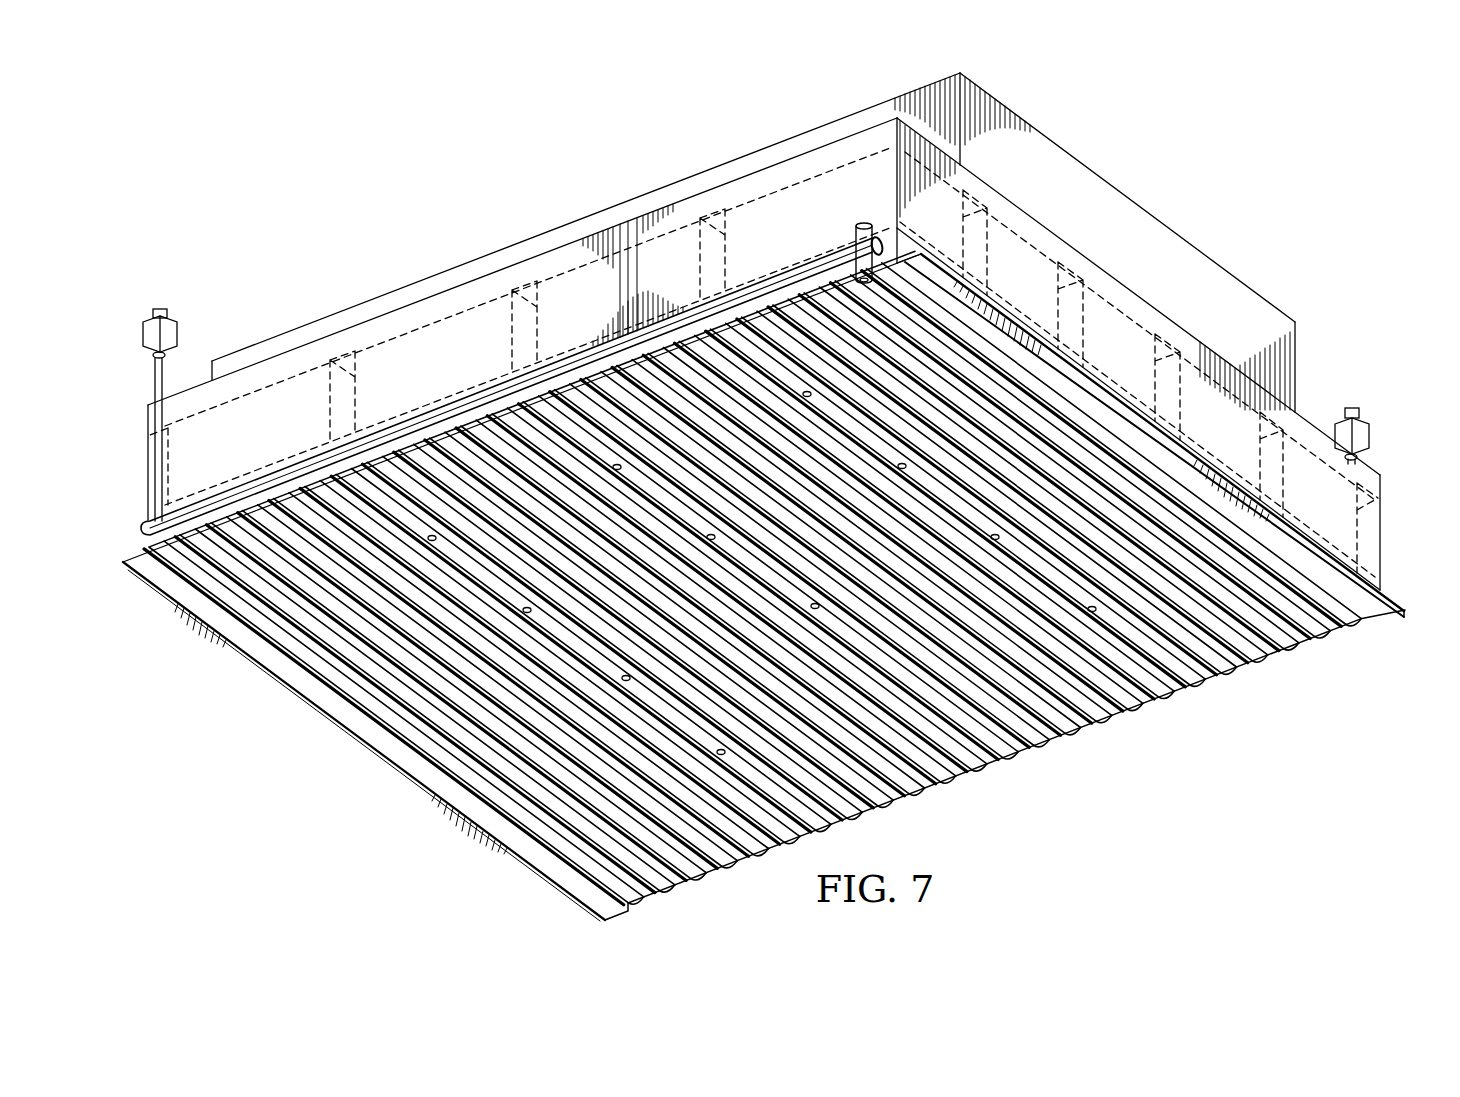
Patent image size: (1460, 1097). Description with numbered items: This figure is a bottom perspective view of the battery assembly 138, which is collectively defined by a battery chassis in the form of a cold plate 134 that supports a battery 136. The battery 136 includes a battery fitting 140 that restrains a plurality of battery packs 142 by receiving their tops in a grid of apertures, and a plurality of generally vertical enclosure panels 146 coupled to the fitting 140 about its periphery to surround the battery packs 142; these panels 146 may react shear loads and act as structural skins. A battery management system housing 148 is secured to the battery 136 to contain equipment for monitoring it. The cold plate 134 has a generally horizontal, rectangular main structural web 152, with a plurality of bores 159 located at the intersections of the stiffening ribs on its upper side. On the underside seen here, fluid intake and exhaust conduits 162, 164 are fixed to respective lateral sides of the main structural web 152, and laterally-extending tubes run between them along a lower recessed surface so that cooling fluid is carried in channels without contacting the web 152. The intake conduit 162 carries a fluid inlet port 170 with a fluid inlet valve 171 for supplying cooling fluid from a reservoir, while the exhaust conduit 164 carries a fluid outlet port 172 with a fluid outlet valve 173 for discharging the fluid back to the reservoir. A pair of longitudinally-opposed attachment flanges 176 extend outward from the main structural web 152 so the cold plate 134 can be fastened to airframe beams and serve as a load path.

The cold plate 134 is at (360, 751).
The battery 136 is at (1370, 542).
The battery assembly 138 is at (1226, 125).
The battery fitting 140 is at (790, 160).
The battery packs 142 is at (558, 280).
The enclosure panels 146 is at (532, 322).
The battery management system housing 148 is at (1085, 182).
The main structural web 152 is at (988, 748).
The bores 159 is at (1092, 616).
The fluid intake conduit 162 is at (458, 398).
The fluid exhaust conduit 164 is at (152, 372).
The fluid inlet port 170 is at (155, 309).
The fluid inlet valve 171 is at (180, 334).
The fluid outlet port 172 is at (1354, 400).
The fluid outlet valve 173 is at (1372, 436).
The attachment flanges 176 is at (1385, 612).